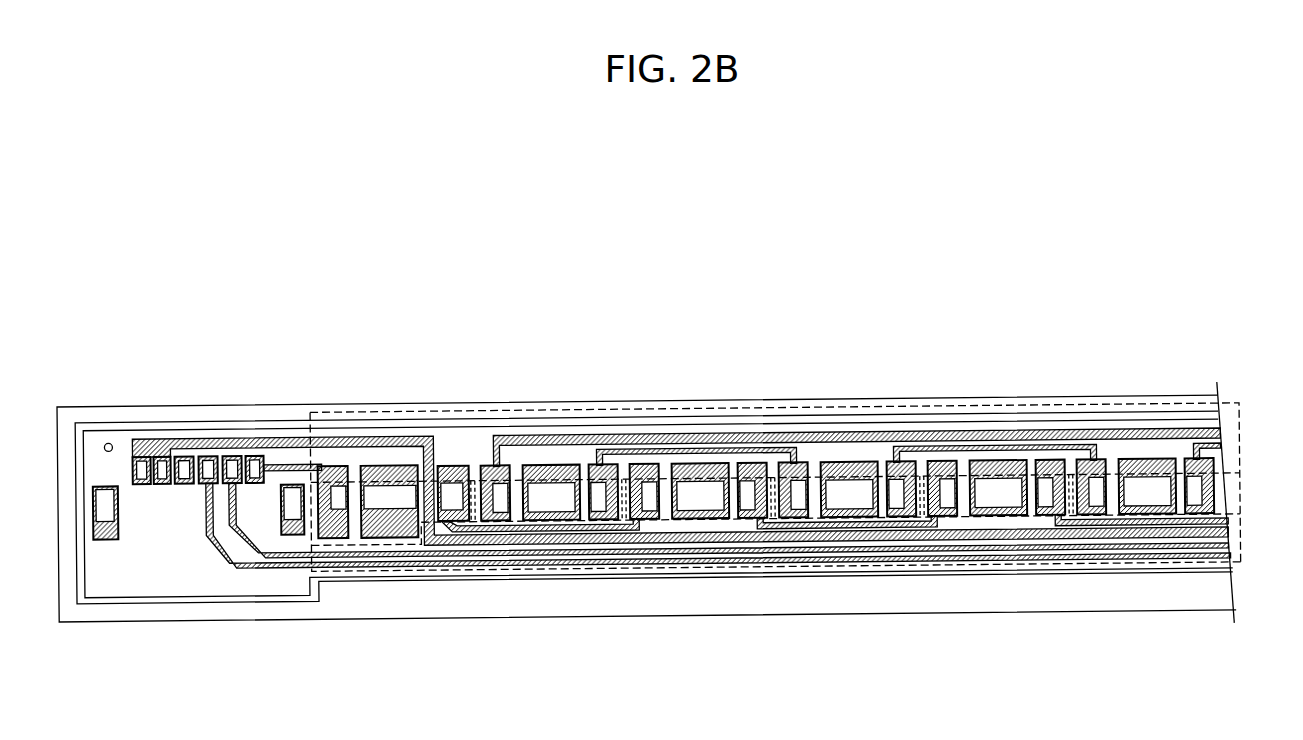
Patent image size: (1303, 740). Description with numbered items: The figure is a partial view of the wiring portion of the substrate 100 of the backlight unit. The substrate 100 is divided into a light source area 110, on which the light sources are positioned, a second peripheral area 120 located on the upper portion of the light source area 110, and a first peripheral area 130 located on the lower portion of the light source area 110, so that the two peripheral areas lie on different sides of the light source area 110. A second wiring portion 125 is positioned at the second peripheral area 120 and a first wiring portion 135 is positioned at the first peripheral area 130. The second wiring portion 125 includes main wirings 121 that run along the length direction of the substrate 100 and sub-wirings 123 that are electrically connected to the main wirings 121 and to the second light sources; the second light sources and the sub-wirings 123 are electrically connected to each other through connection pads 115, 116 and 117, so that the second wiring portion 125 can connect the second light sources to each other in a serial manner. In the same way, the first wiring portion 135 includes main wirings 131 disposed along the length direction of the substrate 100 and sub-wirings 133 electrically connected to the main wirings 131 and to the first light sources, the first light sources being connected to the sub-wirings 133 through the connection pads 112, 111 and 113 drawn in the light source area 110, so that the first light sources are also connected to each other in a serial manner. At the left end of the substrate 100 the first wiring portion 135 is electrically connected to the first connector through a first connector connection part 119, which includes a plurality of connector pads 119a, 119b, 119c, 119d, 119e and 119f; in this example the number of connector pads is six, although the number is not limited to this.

The substrate 100 is at (658, 235).
The light source area 110 is at (1233, 484).
The connection pad 111 is at (1145, 497).
The connection pad 112 is at (1093, 498).
The connection pad 113 is at (1193, 497).
The connection pad 115 is at (394, 500).
The connection pad 116 is at (340, 500).
The connection pad 117 is at (450, 500).
The first connector connection part 119 is at (347, 352).
The connector pad 119a is at (142, 468).
The connector pad 119b is at (162, 468).
The connector pad 119c is at (184, 468).
The connector pad 119d is at (207, 468).
The connector pad 119e is at (232, 468).
The connector pad 119f is at (254, 468).
The second peripheral area 120 is at (1233, 427).
The main wiring 121 is at (688, 437).
The sub-wiring 123 is at (967, 430).
The second wiring portion 125 is at (808, 333).
The first peripheral area 130 is at (1233, 539).
The main wiring 131 is at (678, 548).
The sub-wiring 133 is at (1075, 527).
The first wiring portion 135 is at (977, 665).